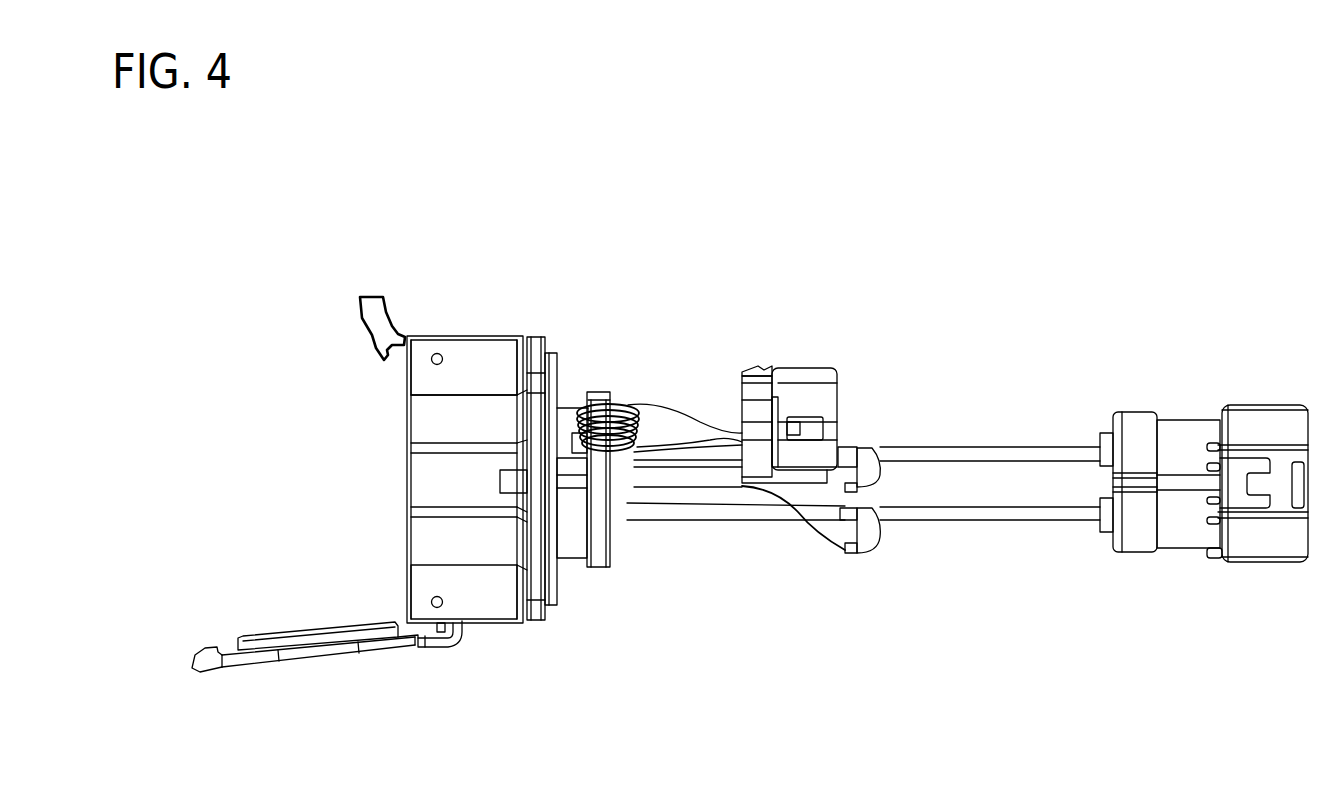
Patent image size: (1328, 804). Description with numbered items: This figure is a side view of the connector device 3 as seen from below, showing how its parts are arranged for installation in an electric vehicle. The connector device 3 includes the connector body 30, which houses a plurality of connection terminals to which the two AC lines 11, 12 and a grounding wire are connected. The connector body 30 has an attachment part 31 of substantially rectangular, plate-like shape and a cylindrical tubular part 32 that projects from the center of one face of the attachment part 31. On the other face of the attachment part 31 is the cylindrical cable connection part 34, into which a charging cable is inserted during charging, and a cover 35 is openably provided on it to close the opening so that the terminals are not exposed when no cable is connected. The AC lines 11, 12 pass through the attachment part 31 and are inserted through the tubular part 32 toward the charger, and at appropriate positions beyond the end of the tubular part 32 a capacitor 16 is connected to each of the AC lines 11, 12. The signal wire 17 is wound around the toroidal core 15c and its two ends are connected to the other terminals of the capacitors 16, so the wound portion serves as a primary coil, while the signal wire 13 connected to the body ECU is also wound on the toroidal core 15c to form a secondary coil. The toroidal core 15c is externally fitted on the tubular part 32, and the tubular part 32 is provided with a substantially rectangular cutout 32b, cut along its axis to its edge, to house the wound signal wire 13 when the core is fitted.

The connector device 3 is at (650, 320).
The AC line 11 is at (980, 520).
The AC line 12 is at (978, 448).
The signal wire 13 is at (683, 419).
The toroidal core 15c is at (600, 556).
The capacitor 16 is at (874, 476).
The signal wire 17 is at (818, 542).
The connector body 30 is at (537, 330).
The attachment part 31 is at (557, 368).
The tubular part 32 is at (577, 545).
The cutout 32b is at (573, 441).
The cable connection part 34 is at (427, 482).
The cover 35 is at (318, 655).